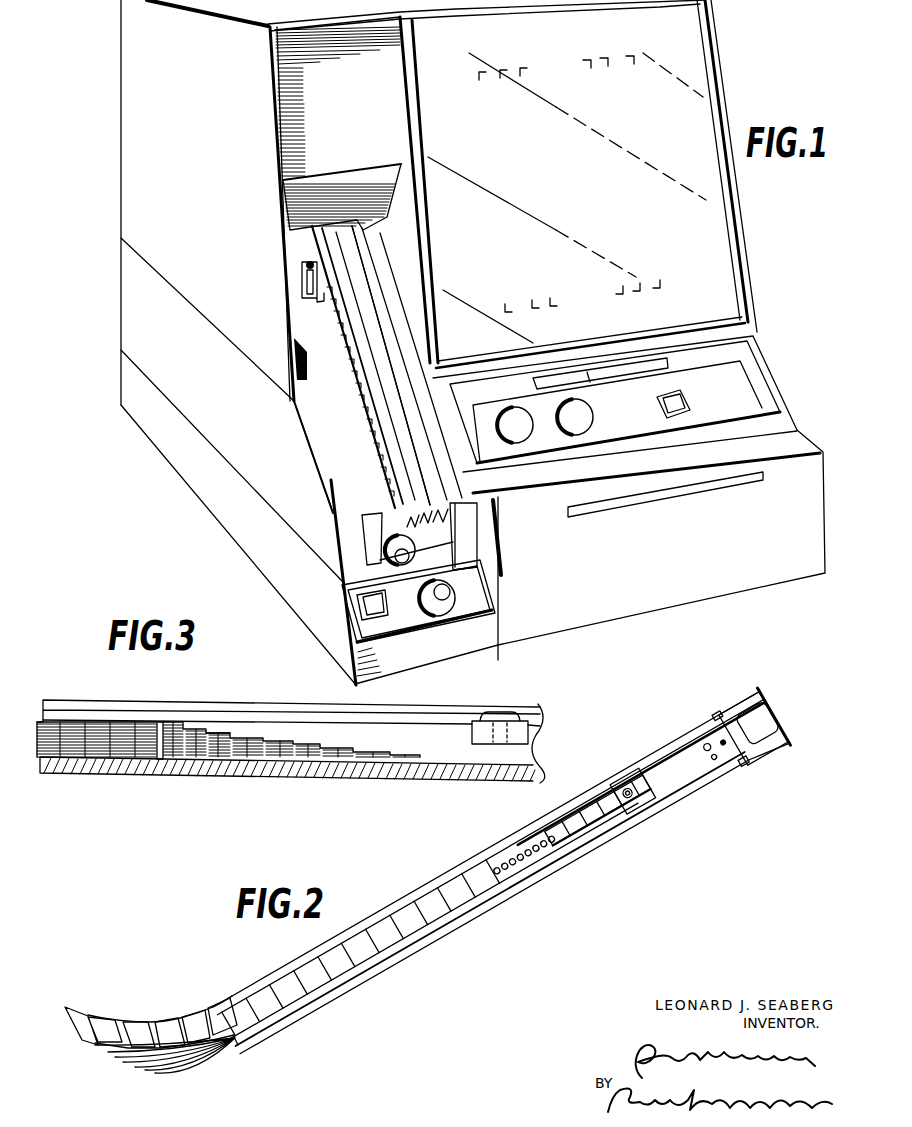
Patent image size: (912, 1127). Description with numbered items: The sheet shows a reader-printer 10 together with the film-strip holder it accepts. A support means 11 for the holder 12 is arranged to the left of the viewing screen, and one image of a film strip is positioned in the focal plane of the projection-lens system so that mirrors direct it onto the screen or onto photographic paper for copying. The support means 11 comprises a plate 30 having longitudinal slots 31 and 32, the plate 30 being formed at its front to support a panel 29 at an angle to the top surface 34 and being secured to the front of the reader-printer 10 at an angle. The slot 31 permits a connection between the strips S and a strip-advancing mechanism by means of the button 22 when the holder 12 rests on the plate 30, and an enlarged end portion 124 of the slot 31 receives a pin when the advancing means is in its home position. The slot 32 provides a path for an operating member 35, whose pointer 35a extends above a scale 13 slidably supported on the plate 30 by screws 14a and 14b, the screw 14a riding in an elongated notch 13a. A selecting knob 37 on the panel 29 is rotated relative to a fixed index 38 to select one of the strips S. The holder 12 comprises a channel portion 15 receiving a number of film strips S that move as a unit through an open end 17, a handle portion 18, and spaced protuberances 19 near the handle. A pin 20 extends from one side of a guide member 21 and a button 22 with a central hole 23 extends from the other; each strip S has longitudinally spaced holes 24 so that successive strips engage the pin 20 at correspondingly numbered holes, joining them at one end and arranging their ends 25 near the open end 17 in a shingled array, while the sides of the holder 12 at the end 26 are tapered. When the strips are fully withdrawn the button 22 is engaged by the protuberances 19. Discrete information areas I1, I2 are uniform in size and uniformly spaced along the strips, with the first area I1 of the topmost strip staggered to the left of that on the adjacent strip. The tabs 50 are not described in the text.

In FIG. 1, the reader-printer 10 is at (112, 107).
In FIG. 1, the support means 11 is at (317, 313).
In FIG. 3, the holder 12 is at (110, 780).
In FIG. 2, the holder 12 is at (667, 744).
In FIG. 1, the scale 13 is at (325, 322).
In FIG. 1, the elongated notch 13a is at (305, 276).
In FIG. 1, the screw 14a is at (300, 264).
In FIG. 1, the screw 14b is at (397, 517).
In FIG. 3, the channel portion 15 is at (287, 768).
In FIG. 2, the channel portion 15 is at (560, 867).
In FIG. 2, the open end 17 is at (237, 1046).
In FIG. 2, the handle portion 18 is at (782, 709).
In FIG. 2, the spaced protuberances 19 is at (706, 745).
In FIG. 3, the pin 20 is at (160, 761).
In FIG. 3, the guide member 21 is at (217, 720).
In FIG. 2, the guide member 21 is at (598, 815).
In FIG. 3, the button 22 is at (512, 748).
In FIG. 2, the button 22 is at (640, 805).
In FIG. 3, the central hole 23 is at (488, 740).
In FIG. 2, the central hole 23 is at (628, 790).
In FIG. 3, the longitudinally spaced holes 24 is at (211, 758).
In FIG. 2, the longitudinally spaced holes 24 is at (521, 868).
In FIG. 2, the ends 25 is at (113, 1075).
In FIG. 2, the end 26 is at (215, 1005).
In FIG. 1, the panel 29 is at (440, 539).
In FIG. 1, the plate 30 is at (347, 414).
In FIG. 1, the longitudinal slot 31 is at (380, 353).
In FIG. 1, the longitudinal slot 32 is at (334, 292).
In FIG. 1, the top surface 34 is at (355, 462).
In FIG. 1, the operating member 35 is at (418, 517).
In FIG. 1, the pointer 35a is at (450, 562).
In FIG. 1, the selecting knob 37 is at (372, 552).
In FIG. 1, the fixed index 38 is at (408, 522).
In FIG. 2, the locating tabs 50 is at (721, 716).
In FIG. 1, the enlarged end portion 124 is at (486, 503).
In FIG. 3, the film strips S is at (97, 722).
In FIG. 2, the film strips S is at (170, 1020).
In FIG. 2, the first information area I1 is at (97, 1017).
In FIG. 2, the second information area I2 is at (133, 1020).